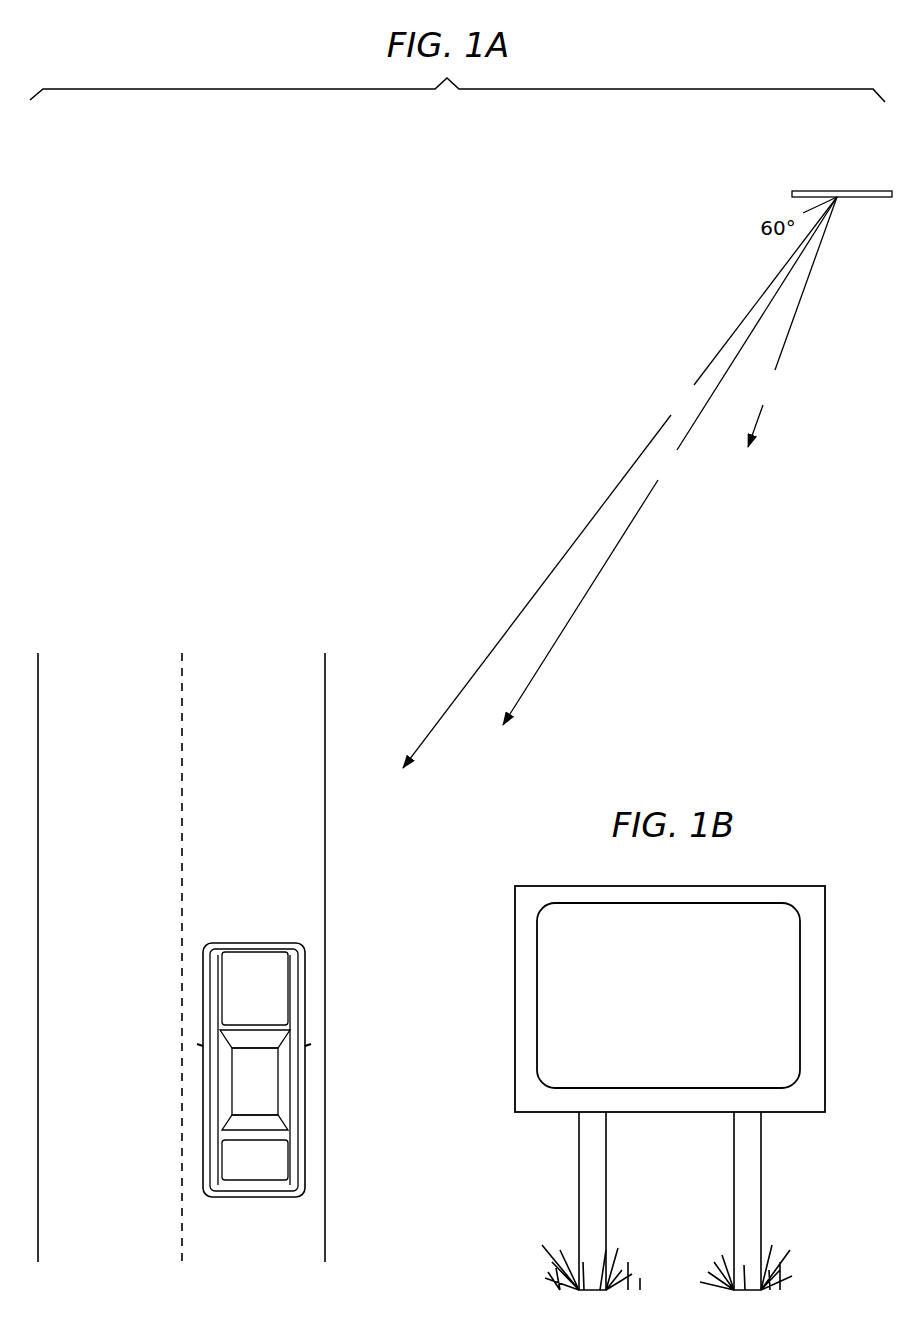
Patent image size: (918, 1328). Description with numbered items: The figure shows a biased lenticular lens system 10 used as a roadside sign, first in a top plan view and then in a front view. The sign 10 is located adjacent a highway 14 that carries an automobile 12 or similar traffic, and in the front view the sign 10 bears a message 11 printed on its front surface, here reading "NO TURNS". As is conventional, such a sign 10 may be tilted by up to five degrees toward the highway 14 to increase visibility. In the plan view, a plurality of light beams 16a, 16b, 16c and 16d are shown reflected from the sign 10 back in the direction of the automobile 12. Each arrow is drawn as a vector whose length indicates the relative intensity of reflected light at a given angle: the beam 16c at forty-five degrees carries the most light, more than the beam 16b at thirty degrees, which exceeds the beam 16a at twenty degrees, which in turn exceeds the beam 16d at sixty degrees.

In FIG. 1A, the biased lenticular lens system 10 is at (845, 176).
In FIG. 1B, the biased lenticular lens system 10 is at (810, 898).
In FIG. 1B, the message 11 is at (755, 975).
In FIG. 1A, the automobile 12 is at (247, 968).
In FIG. 1A, the highway 14 is at (249, 724).
In FIG. 1A, the light beam 16a is at (789, 335).
In FIG. 1A, the light beam 16b is at (576, 610).
In FIG. 1A, the light beam 16c is at (544, 583).
In FIG. 1A, the light beam 16d is at (762, 235).